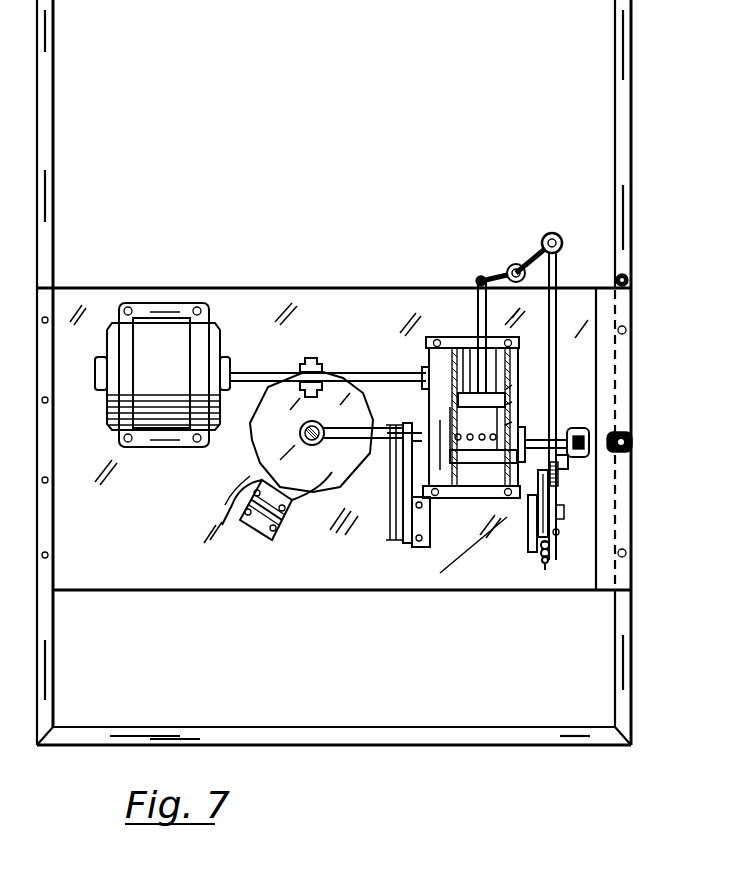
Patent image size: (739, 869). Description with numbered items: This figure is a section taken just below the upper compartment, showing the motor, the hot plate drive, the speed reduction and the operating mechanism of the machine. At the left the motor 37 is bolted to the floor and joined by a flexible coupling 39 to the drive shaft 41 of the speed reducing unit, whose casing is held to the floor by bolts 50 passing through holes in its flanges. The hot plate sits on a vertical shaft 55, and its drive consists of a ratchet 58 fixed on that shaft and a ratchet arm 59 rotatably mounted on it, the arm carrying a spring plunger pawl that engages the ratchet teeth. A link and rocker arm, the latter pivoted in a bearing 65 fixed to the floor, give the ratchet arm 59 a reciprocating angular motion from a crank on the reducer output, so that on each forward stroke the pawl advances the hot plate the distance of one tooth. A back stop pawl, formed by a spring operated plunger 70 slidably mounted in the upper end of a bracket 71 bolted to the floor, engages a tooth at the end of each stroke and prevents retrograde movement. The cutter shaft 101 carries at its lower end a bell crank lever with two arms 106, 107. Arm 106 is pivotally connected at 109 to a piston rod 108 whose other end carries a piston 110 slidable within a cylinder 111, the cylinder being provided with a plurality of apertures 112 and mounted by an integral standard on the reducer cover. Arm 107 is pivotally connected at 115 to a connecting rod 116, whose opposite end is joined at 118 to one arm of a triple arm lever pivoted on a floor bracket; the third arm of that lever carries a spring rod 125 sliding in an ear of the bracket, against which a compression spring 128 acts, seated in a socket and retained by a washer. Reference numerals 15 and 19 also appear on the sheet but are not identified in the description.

The motor 37 is at (172, 382).
The flexible coupling 39 is at (313, 357).
The drive shaft 41 is at (378, 372).
The vertical shaft 55 is at (300, 440).
The ratchet 58 is at (355, 452).
The ratchet arm 59 is at (335, 502).
The spring operated plunger 70 is at (248, 517).
The bracket 71 is at (270, 545).
The bearing 65 is at (416, 529).
The bolts 50 is at (508, 566).
The shaft 101 is at (512, 264).
The arm 106 is at (496, 268).
The arm 107 is at (532, 250).
The piston rod 108 is at (478, 318).
The pivot 109 is at (480, 276).
The pivot 115 is at (559, 236).
The connecting rod 116 is at (560, 276).
The piston 110 is at (505, 392).
The cylinder 111 is at (506, 406).
The apertures 112 is at (510, 426).
The clevis 15 is at (590, 468).
The stop member 19 is at (557, 530).
The pivotal connection 118 is at (566, 515).
The spring rod 125 is at (542, 569).
The compression spring 128 is at (552, 554).